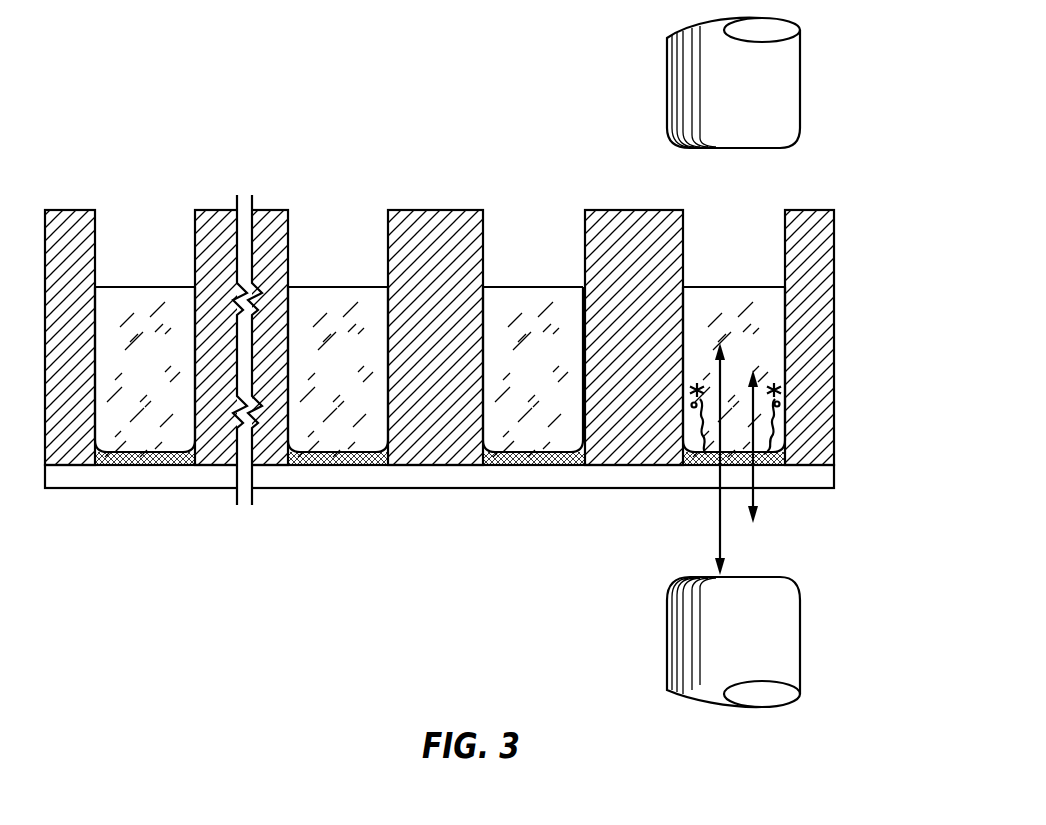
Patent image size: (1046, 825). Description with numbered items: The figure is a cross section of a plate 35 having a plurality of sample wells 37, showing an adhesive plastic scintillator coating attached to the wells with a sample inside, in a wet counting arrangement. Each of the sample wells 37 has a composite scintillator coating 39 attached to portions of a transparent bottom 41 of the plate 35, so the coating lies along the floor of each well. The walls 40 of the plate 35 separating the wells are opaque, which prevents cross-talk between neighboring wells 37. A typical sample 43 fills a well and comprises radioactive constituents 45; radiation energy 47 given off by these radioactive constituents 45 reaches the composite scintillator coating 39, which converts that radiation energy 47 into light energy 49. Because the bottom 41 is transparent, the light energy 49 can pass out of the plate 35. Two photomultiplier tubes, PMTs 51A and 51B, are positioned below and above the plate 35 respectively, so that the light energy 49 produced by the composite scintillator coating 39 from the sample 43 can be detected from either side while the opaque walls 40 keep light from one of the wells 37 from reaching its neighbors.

The plate 35 is at (474, 310).
The sample wells 37 is at (760, 341).
The composite scintillator coating 39 is at (701, 467).
The walls 40 is at (627, 222).
The transparent bottom 41 is at (531, 481).
The sample 43 is at (765, 305).
The radioactive constituents 45 is at (776, 384).
The radiation energy 47 is at (768, 422).
The light energy 49 is at (720, 530).
The PMT 51A is at (665, 617).
The PMT 51B is at (665, 77).